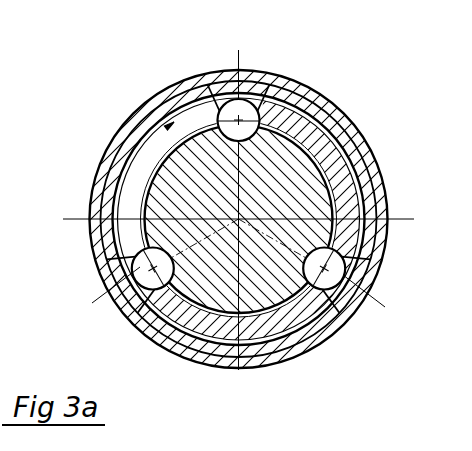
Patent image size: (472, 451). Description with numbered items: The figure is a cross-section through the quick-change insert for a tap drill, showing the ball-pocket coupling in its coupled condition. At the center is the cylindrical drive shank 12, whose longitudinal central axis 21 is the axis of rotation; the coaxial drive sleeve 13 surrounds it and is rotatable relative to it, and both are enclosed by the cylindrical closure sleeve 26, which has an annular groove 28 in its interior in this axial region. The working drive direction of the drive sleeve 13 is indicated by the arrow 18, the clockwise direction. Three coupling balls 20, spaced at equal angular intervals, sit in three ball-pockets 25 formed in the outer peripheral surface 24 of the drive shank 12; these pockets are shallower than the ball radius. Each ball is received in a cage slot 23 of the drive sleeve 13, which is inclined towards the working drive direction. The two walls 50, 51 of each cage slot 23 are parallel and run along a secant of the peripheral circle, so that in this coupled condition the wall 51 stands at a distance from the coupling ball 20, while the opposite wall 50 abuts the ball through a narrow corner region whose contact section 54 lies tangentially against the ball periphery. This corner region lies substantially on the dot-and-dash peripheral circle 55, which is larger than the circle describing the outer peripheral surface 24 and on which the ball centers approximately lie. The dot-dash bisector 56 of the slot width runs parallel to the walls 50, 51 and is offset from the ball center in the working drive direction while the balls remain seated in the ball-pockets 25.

The drive shank 12 is at (326, 183).
The drive sleeve 13 is at (308, 122).
The arrow 18 is at (143, 163).
The coupling balls 20 is at (228, 100).
The longitudinal central axis 21 is at (250, 295).
The cage slots 23 is at (207, 87).
The outer peripheral surface 24 is at (208, 305).
The ball-pockets 25 is at (387, 228).
The closure sleeve 26 is at (336, 330).
The annular groove 28 is at (133, 137).
The wall 50 is at (163, 90).
The wall 51 is at (279, 100).
The contact section 54 is at (143, 200).
The peripheral circle 55 is at (333, 175).
The bisector 56 is at (246, 117).